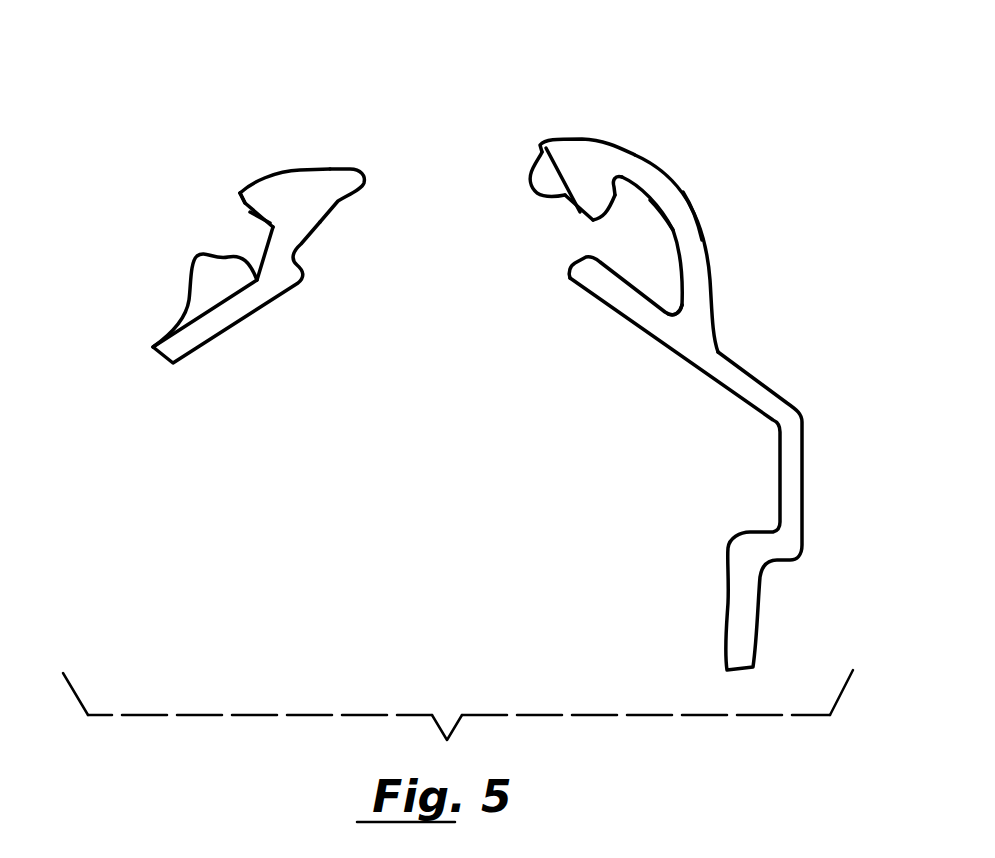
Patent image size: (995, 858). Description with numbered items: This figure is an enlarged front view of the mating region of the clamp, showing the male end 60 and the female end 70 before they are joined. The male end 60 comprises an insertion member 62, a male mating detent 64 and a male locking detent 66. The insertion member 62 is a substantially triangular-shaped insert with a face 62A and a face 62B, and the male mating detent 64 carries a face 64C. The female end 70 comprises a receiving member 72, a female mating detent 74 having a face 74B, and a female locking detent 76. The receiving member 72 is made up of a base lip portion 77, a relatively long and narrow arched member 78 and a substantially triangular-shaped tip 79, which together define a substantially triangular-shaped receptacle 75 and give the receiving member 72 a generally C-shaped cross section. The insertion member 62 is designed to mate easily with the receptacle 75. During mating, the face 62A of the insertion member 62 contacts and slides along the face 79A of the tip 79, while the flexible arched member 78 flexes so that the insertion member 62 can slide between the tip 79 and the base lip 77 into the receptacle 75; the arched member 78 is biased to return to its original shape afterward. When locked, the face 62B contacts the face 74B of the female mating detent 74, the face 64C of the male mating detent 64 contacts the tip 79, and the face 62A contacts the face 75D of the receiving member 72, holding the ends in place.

The male end 60 is at (247, 282).
The insertion member 62 is at (303, 183).
The face of the insertion member 62A is at (338, 170).
The face of the insertion member 62B is at (243, 205).
The male mating detent 64 is at (245, 203).
The face of the male mating detent 64C is at (260, 222).
The male locking detent 66 is at (203, 267).
The female end 70 is at (628, 344).
The receiving member 72 is at (683, 192).
The female mating detent 74 is at (617, 182).
The face of the female mating detent 74B is at (668, 227).
The receptacle 75 is at (627, 263).
The face of the receiving member 75D is at (678, 295).
The female locking detent 76 is at (533, 197).
The base lip portion 77 is at (632, 308).
The arched member 78 is at (683, 220).
The tip 79 is at (548, 148).
The face of the tip 79A is at (578, 212).